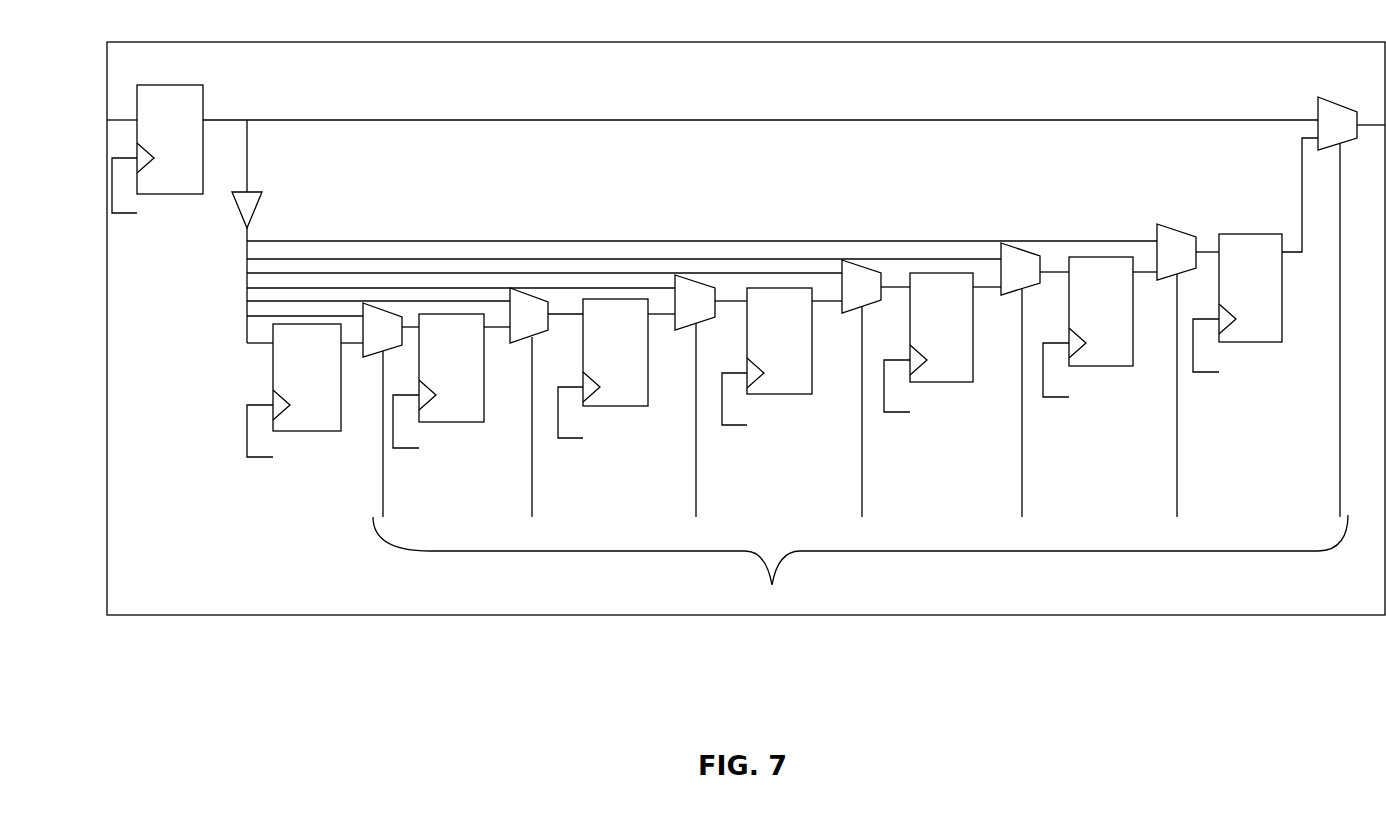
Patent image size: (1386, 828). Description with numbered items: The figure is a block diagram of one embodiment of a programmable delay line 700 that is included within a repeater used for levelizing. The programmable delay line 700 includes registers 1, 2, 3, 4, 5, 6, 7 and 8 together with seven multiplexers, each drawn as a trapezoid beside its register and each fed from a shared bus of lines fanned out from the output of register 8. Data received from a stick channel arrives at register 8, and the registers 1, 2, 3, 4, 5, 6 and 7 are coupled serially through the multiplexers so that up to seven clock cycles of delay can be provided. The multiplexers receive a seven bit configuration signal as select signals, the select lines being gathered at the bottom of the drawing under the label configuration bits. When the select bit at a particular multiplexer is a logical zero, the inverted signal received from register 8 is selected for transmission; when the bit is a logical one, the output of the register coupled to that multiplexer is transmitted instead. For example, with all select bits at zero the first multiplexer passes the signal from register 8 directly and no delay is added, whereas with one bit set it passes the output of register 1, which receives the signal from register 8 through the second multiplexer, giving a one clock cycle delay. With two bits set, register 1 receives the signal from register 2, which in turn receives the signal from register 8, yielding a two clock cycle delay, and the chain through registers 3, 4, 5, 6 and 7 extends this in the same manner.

The programmable delay line 700 is at (746, 328).
The register 1 is at (1275, 307).
The register 2 is at (1131, 370).
The register 3 is at (976, 380).
The register 4 is at (816, 388).
The register 5 is at (652, 396).
The register 6 is at (488, 402).
The register 7 is at (333, 410).
The register 8 is at (157, 155).